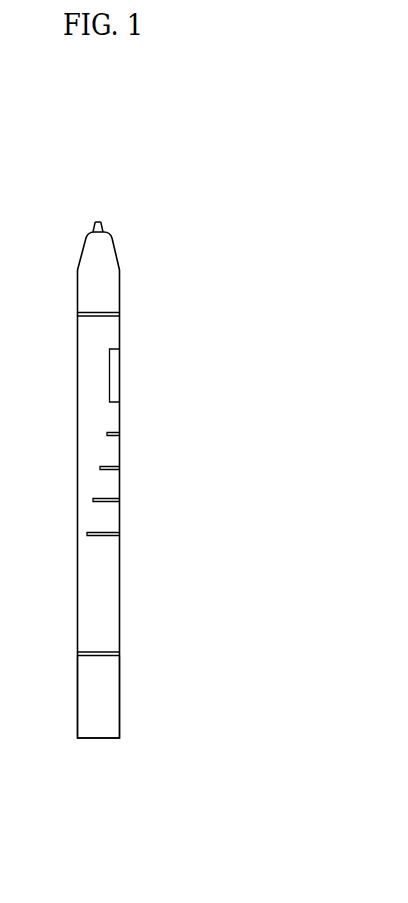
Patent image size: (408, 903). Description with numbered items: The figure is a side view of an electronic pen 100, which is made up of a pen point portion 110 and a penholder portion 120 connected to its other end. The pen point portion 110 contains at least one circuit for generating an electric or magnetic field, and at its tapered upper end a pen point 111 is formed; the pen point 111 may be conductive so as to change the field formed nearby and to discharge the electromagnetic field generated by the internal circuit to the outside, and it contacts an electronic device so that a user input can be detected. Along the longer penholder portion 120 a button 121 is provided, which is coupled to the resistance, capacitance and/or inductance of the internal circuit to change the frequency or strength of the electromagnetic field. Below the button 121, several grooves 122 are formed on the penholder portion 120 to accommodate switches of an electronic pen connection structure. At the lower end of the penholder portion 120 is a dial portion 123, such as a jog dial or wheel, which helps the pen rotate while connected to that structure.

The electronic pen 100 is at (288, 168).
The pen point portion 110 is at (81, 251).
The pen point 111 is at (114, 210).
The penholder portion 120 is at (107, 522).
The button 121 is at (115, 372).
The groove 122 is at (137, 425).
The dial portion 123 is at (111, 716).